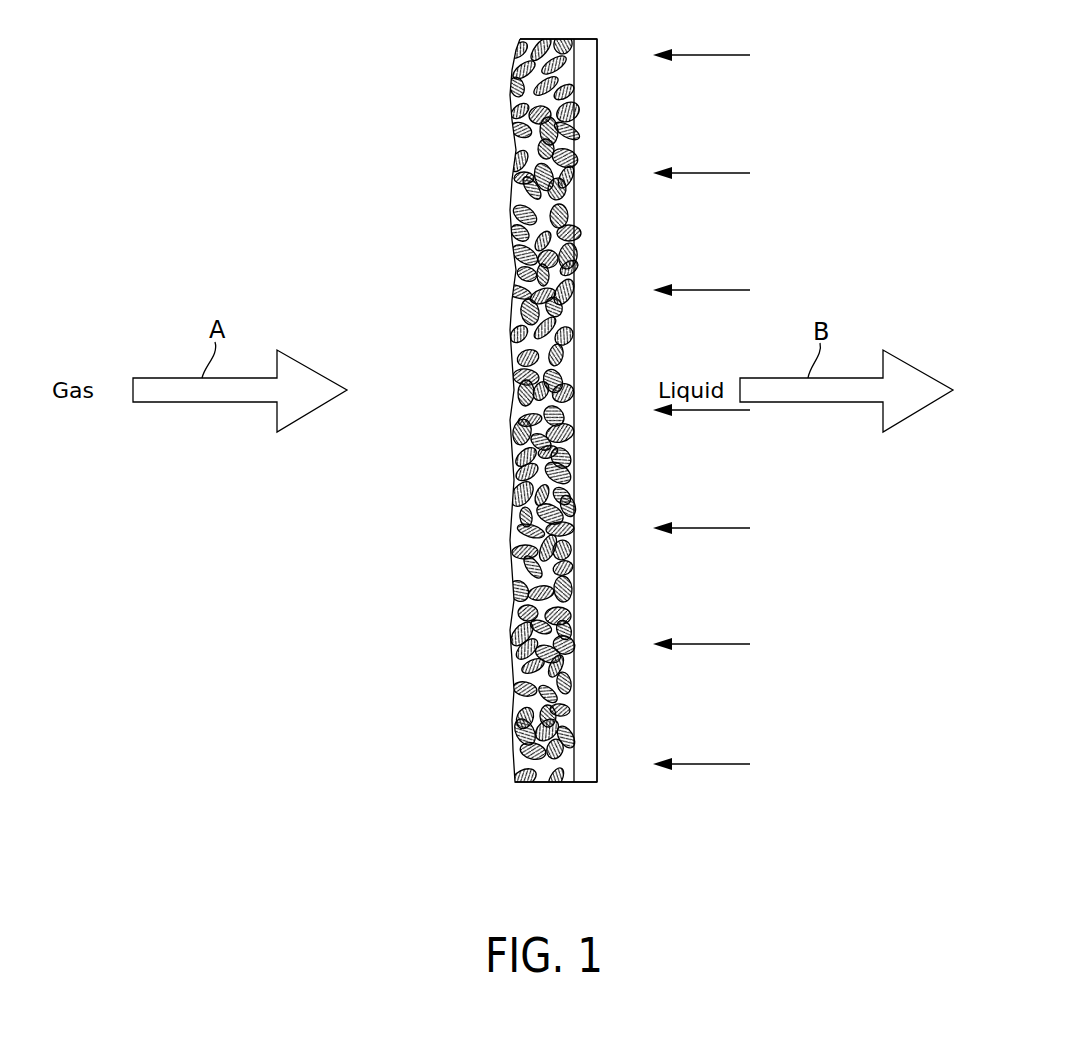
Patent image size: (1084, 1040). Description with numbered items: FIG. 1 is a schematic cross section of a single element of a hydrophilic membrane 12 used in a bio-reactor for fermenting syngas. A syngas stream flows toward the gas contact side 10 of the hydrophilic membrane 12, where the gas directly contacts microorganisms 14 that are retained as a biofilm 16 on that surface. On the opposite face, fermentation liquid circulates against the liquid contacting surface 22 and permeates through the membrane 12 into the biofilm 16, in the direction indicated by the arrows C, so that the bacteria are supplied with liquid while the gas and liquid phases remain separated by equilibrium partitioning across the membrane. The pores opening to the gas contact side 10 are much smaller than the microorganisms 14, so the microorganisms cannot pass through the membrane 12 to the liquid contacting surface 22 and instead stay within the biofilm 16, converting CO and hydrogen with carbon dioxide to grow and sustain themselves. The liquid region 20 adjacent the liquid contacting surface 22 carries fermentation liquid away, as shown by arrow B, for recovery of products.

The gas contact side 10 is at (536, 403).
The hydrophilic membrane 12 is at (590, 783).
The microorganisms 14 is at (513, 95).
The biofilm 16 is at (506, 276).
The liquid flow 20 is at (633, 119).
The liquid contacting surface 22 is at (598, 233).